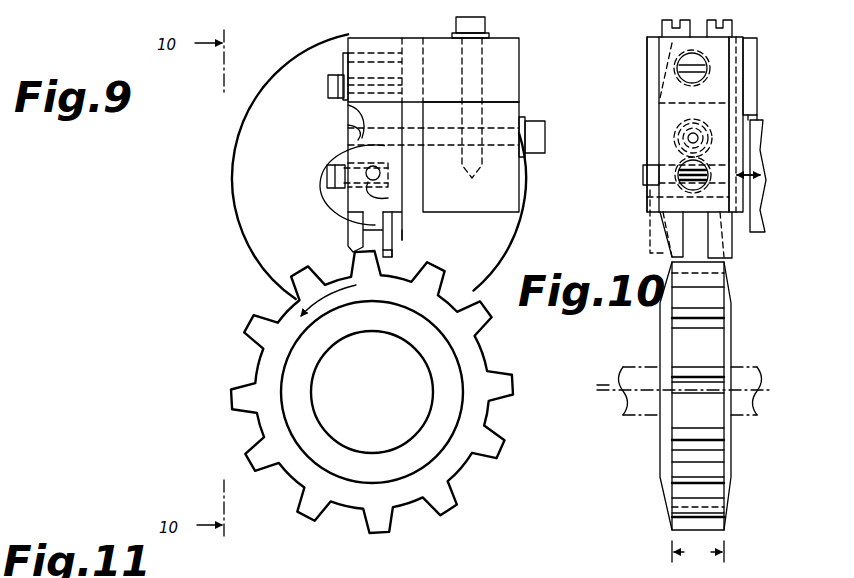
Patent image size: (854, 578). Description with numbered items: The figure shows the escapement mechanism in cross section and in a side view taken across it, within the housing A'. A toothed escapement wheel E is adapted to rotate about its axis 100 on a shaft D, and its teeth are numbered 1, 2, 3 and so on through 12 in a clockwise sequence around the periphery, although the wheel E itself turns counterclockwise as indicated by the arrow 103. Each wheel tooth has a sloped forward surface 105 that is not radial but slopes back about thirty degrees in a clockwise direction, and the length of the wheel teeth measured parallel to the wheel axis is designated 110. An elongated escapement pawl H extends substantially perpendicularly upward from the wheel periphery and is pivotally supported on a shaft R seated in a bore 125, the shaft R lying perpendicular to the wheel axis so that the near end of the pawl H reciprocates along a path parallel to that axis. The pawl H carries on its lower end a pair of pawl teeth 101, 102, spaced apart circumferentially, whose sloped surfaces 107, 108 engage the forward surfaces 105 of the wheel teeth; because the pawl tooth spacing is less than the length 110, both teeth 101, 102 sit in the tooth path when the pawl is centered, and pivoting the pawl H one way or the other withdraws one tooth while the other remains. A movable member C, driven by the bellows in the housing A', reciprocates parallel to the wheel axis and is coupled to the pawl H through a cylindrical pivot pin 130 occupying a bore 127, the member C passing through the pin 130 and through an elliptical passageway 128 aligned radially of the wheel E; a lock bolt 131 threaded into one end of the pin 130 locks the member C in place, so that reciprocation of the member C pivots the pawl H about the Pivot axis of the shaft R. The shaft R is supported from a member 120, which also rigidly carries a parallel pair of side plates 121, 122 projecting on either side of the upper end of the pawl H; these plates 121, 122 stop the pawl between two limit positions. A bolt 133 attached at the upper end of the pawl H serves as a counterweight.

In FIG. 10, the wheel axis 100 is at (612, 392).
In FIG. 9, the pawl tooth 101 is at (353, 232).
In FIG. 10, the pawl tooth 101 is at (735, 255).
In FIG. 9, the pawl tooth 102 is at (390, 258).
In FIG. 10, the pawl tooth 102 is at (658, 250).
In FIG. 9, the arrow 103 is at (300, 302).
In FIG. 9, the sloped forward surface 105 is at (430, 260).
In FIG. 9, the sloped surface 107 is at (404, 236).
In FIG. 9, the sloped surface 108 is at (395, 258).
In FIG. 10, the wheel tooth length 110 is at (698, 551).
In FIG. 9, the member 120 is at (508, 193).
In FIG. 10, the side plate 121 is at (647, 44).
In FIG. 9, the side plate 122 is at (490, 52).
In FIG. 10, the side plate 122 is at (747, 55).
In FIG. 9, the bore 125 is at (348, 108).
In FIG. 9, the bore 127 is at (357, 200).
In FIG. 10, the bore 127 is at (655, 201).
In FIG. 9, the elliptical passageway 128 is at (385, 166).
In FIG. 10, the elliptical passageway 128 is at (650, 220).
In FIG. 9, the cylindrical pivot pin 130 is at (388, 198).
In FIG. 9, the lock bolt 131 is at (327, 178).
In FIG. 9, the bolt 133 is at (328, 82).
In FIG. 9, the wheel tooth 1 is at (360, 262).
In FIG. 9, the wheel tooth 2 is at (431, 276).
In FIG. 9, the wheel tooth 3 is at (479, 318).
In FIG. 9, the wheel tooth 12 is at (302, 287).
In FIG. 9, the housing A' is at (368, 166).
In FIG. 9, the movable member C is at (380, 177).
In FIG. 10, the movable member C is at (645, 176).
In FIG. 10, the shaft D is at (641, 398).
In FIG. 9, the toothed escapement wheel E is at (460, 456).
In FIG. 10, the toothed escapement wheel E is at (664, 454).
In FIG. 9, the escapement pawl H is at (356, 205).
In FIG. 10, the escapement pawl H is at (657, 66).
In FIG. 9, the shaft R is at (348, 126).
In FIG. 10, the shaft R is at (686, 137).
In FIG. 9, the pivot Pivot is at (330, 132).